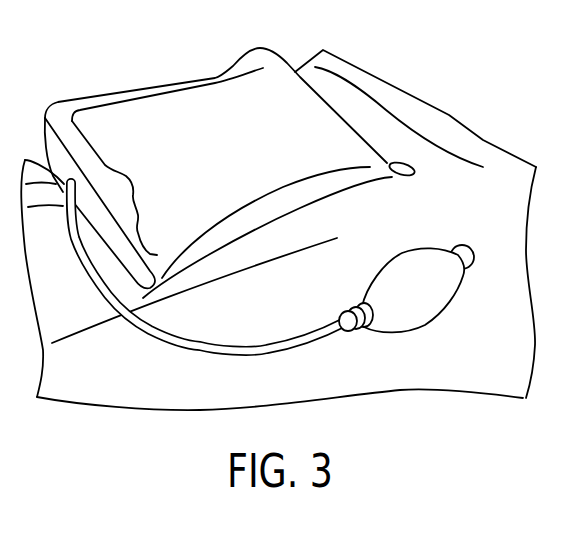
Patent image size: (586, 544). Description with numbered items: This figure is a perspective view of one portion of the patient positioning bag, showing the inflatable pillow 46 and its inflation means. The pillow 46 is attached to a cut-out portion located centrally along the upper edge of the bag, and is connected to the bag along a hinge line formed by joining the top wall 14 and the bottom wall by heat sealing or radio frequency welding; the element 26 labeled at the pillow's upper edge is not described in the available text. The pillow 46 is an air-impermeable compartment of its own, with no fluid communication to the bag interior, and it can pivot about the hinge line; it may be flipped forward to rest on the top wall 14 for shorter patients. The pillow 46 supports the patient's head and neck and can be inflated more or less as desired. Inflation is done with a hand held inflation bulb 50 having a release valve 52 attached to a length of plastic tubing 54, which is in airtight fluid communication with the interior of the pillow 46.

The top wall 14 is at (501, 353).
The cuff 26 is at (152, 87).
The inflatable pillow 46 is at (226, 160).
The hand held inflation bulb 50 is at (422, 300).
The release valve 52 is at (363, 332).
The plastic tubing 54 is at (170, 343).